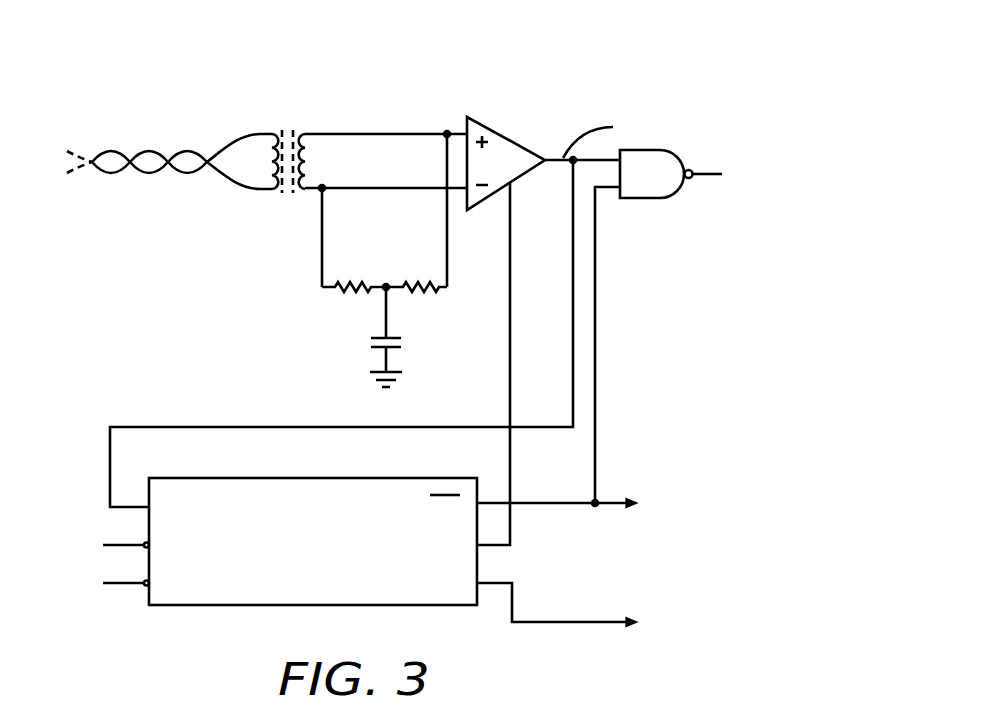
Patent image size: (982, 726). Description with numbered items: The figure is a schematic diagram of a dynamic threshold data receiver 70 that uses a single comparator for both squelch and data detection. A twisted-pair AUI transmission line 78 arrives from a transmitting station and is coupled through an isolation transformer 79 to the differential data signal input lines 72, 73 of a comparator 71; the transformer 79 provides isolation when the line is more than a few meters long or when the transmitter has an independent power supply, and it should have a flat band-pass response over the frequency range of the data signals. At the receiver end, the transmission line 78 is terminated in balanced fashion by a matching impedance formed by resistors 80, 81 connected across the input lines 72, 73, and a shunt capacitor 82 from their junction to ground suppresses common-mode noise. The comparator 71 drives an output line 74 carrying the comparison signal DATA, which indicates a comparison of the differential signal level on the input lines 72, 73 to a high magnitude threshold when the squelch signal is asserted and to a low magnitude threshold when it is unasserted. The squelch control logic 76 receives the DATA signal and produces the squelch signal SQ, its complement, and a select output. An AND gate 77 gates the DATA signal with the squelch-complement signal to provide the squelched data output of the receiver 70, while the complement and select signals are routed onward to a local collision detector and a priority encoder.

The dynamic threshold data receiver 70 is at (727, 70).
The comparator 71 is at (505, 137).
The differential data signal input line 72 is at (456, 131).
The differential data signal input line 73 is at (433, 187).
The output line 74 is at (548, 163).
The squelch control logic 76 is at (335, 478).
The AND gate 77 is at (664, 199).
The twisted-pair AUI transmission line 78 is at (185, 152).
The isolation transformer 79 is at (323, 92).
The resistor 80 is at (342, 290).
The resistor 81 is at (423, 290).
The shunt capacitor 82 is at (398, 347).